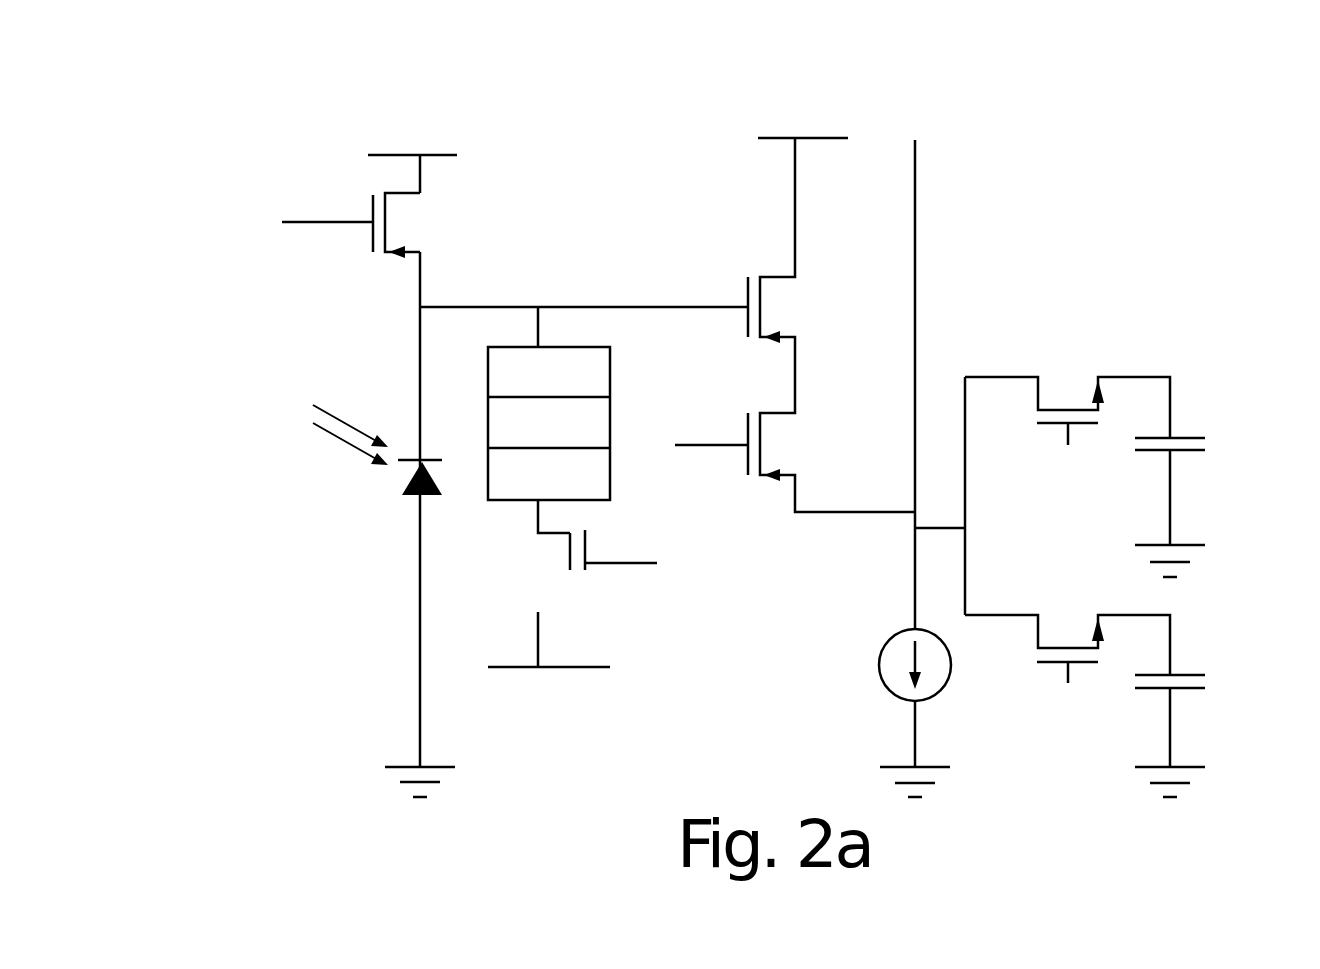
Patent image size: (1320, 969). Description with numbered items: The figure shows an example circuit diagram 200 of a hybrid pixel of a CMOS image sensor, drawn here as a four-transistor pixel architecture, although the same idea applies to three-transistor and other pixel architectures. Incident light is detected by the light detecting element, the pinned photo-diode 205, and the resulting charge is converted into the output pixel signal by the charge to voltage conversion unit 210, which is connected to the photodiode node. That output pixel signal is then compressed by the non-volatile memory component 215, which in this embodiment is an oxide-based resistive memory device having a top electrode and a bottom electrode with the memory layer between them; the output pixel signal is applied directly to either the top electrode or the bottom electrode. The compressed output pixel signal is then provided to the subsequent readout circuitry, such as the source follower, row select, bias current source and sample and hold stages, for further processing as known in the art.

The circuit diagram 200 is at (601, 62).
The pinned photo-diode 205 is at (358, 468).
The charge to voltage conversion unit 210 is at (309, 185).
The NVM component 215 is at (615, 380).